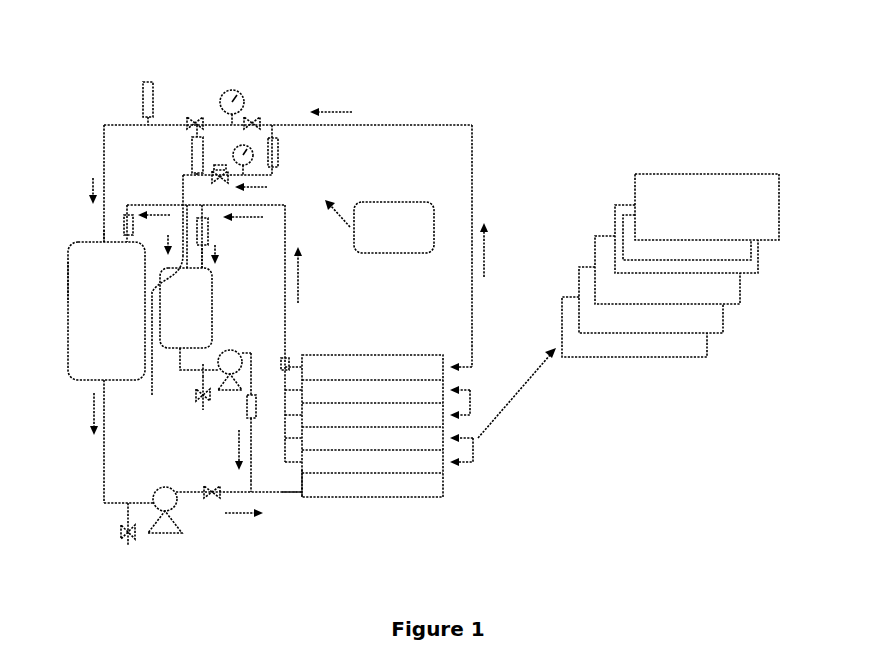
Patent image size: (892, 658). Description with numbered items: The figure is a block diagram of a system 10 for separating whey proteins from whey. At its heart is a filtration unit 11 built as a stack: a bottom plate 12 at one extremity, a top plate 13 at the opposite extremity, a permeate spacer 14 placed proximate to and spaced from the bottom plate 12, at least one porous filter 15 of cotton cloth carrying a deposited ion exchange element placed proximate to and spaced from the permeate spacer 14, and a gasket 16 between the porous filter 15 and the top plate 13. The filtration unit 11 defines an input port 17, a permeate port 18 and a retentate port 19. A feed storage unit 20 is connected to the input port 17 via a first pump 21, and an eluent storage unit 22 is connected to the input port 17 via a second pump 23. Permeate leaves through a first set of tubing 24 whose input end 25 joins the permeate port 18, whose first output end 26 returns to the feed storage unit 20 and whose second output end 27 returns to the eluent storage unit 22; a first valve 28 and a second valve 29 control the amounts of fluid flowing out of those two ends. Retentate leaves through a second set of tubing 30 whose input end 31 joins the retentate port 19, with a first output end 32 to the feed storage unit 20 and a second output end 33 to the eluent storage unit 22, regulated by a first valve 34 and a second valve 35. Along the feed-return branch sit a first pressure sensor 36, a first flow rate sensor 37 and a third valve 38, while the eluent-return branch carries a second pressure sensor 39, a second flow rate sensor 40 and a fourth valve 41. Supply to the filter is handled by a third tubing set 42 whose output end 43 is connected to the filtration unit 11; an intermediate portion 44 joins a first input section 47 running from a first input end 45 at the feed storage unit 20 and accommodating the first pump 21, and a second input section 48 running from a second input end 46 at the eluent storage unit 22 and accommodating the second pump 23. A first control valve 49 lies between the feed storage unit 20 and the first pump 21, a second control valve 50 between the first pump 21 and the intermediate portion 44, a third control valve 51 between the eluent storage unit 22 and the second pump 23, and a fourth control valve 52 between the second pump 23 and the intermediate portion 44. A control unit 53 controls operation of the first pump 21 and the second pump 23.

The system 10 is at (520, 68).
The filtration unit 11 is at (408, 352).
The bottom plate 12 is at (693, 343).
The top plate 13 is at (765, 198).
The permeate spacer 14 is at (715, 317).
The porous filter 15 is at (727, 293).
The gasket 16 is at (745, 243).
The input port 17 is at (303, 494).
The permeate port 18 is at (290, 365).
The retentate port 19 is at (445, 357).
The feed storage unit 20 is at (106, 311).
The first pump 21 is at (165, 535).
The eluent storage unit 22 is at (186, 308).
The second pump 23 is at (232, 350).
The first set of tubing 24 is at (286, 234).
The input end 25 is at (283, 356).
The first output end 26 is at (121, 237).
The second output end 27 is at (208, 269).
The first valve 28 is at (123, 213).
The second valve 29 is at (210, 232).
The second set of tubing 30 is at (474, 186).
The input end 31 is at (473, 361).
The first output end 32 is at (88, 236).
The second output end 33 is at (160, 338).
The first valve 34 is at (254, 116).
The second valve 35 is at (281, 150).
The first pressure sensor 36 is at (238, 92).
The first flow rate sensor 37 is at (152, 90).
The third valve 38 is at (197, 115).
The second pressure sensor 39 is at (235, 151).
The second flow rate sensor 40 is at (191, 158).
The fourth valve 41 is at (224, 186).
The third tubing set 42 is at (104, 504).
The output end 43 is at (290, 494).
The intermediate portion 44 is at (252, 490).
The first input end 45 is at (104, 383).
The second input end 46 is at (165, 352).
The first input section 47 is at (192, 491).
The second input section 48 is at (252, 446).
The first control valve 49 is at (129, 542).
The second control valve 50 is at (208, 497).
The third control valve 51 is at (206, 404).
The fourth control valve 52 is at (257, 398).
The control unit 53 is at (394, 227).